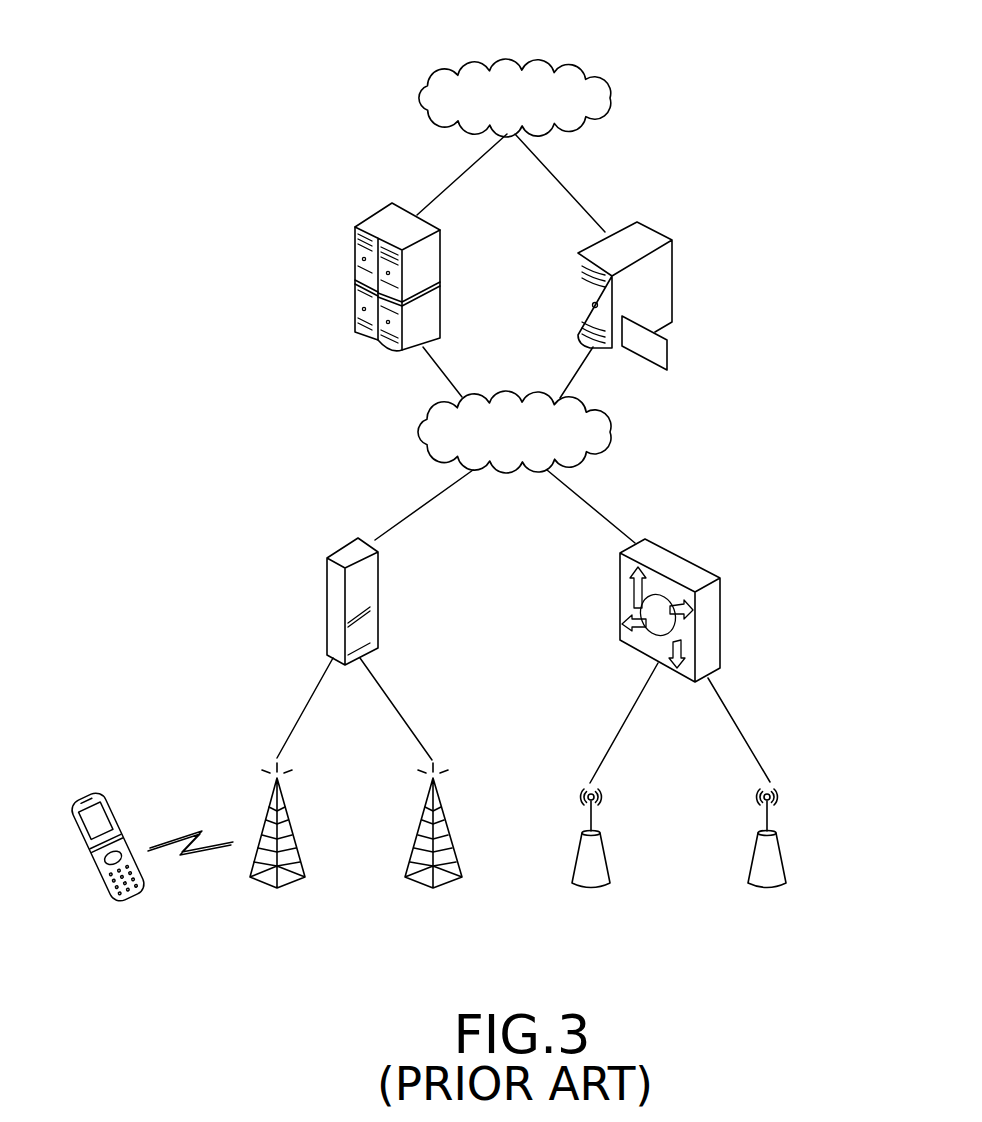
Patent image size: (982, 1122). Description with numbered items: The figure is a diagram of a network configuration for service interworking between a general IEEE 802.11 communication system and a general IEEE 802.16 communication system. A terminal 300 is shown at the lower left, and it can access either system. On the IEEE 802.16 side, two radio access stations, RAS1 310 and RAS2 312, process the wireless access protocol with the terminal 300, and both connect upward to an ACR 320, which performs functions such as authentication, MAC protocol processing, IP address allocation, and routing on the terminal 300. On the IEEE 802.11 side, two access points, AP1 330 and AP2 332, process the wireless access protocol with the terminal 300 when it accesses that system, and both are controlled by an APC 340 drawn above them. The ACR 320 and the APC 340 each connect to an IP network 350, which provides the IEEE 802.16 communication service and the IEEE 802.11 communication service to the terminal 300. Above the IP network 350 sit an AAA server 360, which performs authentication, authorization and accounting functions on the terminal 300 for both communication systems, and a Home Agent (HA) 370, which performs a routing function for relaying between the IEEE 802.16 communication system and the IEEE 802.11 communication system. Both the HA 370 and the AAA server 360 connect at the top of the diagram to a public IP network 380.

The terminal 300 is at (92, 795).
The RAS1 310 is at (301, 847).
The RAS2 312 is at (458, 847).
The ACR 320 is at (340, 548).
The AP1 330 is at (608, 853).
The AP2 332 is at (786, 853).
The APC 340 is at (680, 557).
The IP network 350 is at (514, 393).
The AAA server 360 is at (655, 232).
The Home Agent (HA) 370 is at (441, 258).
The public IP network 380 is at (514, 60).